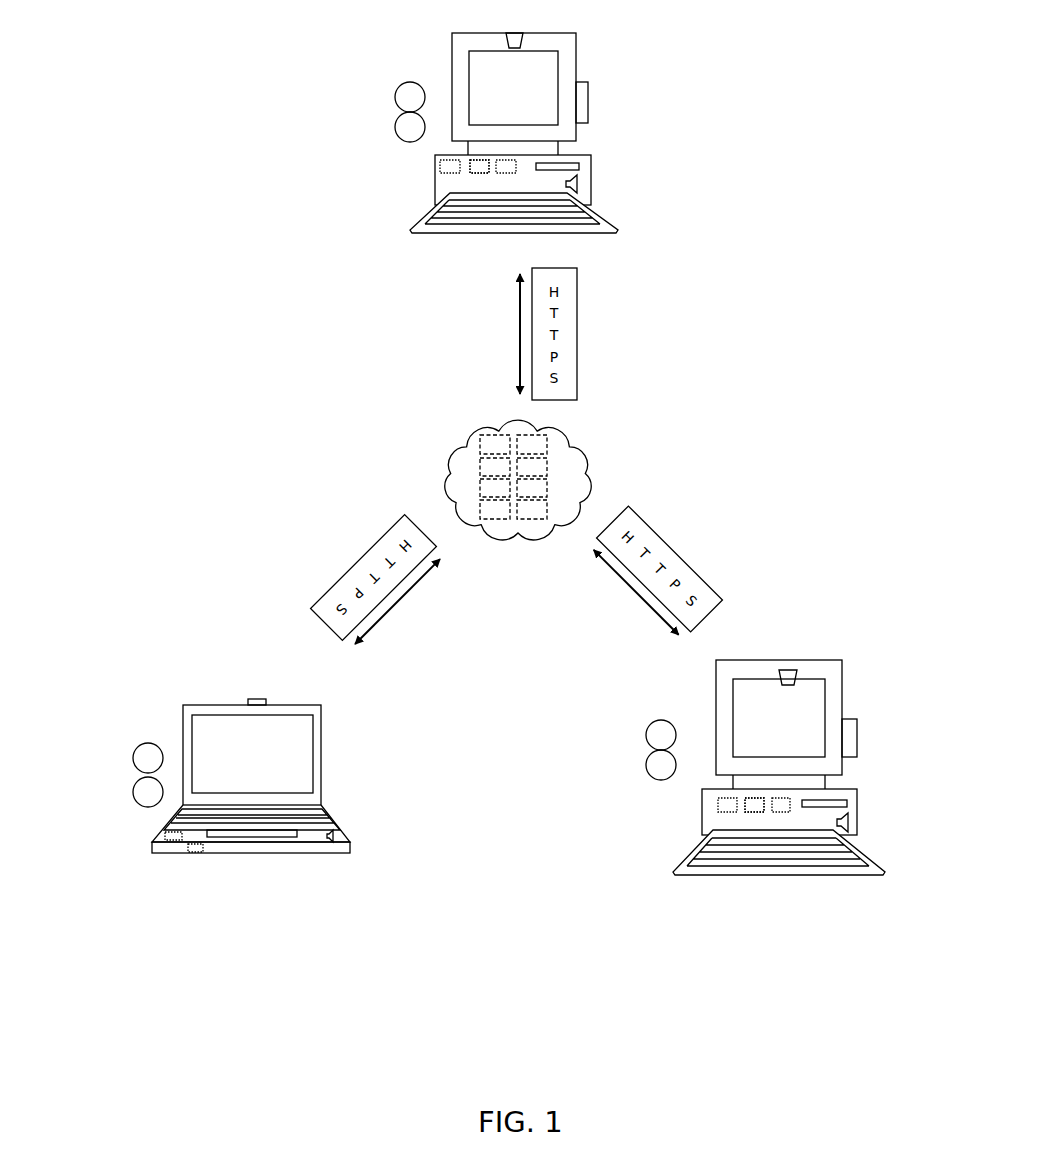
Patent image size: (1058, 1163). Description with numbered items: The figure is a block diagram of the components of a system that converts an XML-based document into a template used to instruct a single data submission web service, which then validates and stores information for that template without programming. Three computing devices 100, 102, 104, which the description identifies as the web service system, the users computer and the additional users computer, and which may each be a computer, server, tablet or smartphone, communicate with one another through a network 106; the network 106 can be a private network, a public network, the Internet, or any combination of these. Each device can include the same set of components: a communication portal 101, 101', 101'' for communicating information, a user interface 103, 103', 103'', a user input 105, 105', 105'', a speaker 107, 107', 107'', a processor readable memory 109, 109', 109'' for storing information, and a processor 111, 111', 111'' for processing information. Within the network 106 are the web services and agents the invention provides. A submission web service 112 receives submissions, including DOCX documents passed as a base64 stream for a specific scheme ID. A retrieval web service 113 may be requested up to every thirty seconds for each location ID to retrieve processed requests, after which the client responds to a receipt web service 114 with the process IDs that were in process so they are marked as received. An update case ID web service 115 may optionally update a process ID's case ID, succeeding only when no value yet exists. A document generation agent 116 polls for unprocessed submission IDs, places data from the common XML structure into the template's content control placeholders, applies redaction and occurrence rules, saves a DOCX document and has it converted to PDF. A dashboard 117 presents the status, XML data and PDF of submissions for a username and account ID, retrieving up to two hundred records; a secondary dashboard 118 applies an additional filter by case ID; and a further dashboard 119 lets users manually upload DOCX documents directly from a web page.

The first computing device 100 is at (580, 27).
The communication portal 101 is at (615, 102).
The communication portal 101' is at (285, 689).
The communication portal 101'' is at (888, 738).
The second computing device (laptop) 102 is at (323, 699).
The user interface 103 is at (473, 86).
The user interface 103' is at (208, 754).
The user interface 103'' is at (735, 718).
The third computing device 104 is at (822, 659).
The user input 105 is at (552, 213).
The user input 105' is at (287, 822).
The user input 105'' is at (814, 852).
The network 106 is at (574, 420).
The speaker 107 is at (615, 180).
The speaker 107' is at (376, 849).
The speaker 107'' is at (889, 817).
The processor readable memory 109 is at (439, 174).
The processor readable memory 109' is at (145, 872).
The processor readable memory 109'' is at (703, 809).
The processor 111 is at (421, 198).
The processor 111' is at (136, 830).
The processor 111'' is at (689, 831).
The submission web service 112 is at (478, 443).
The retrieval web service 113 is at (478, 464).
The receipt web service 114 is at (478, 487).
The update case ID web service 115 is at (478, 512).
The document generation agent 116 is at (556, 440).
The dashboard 117 is at (556, 459).
The secondary dashboard 118 is at (556, 480).
The dashboard 119 is at (574, 503).